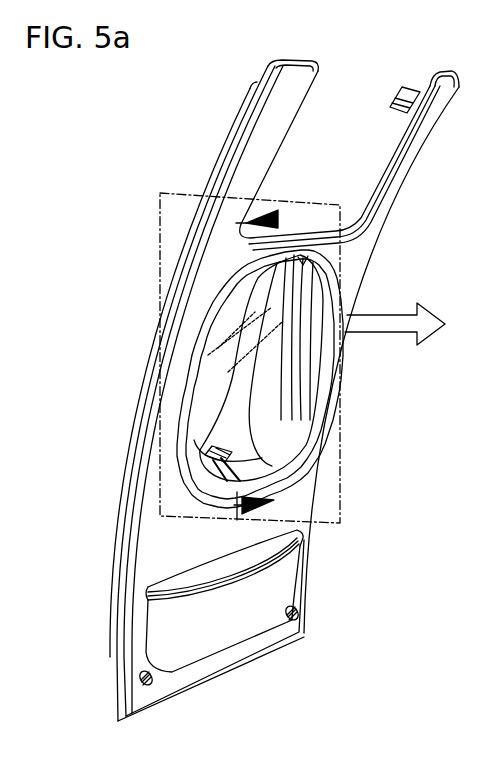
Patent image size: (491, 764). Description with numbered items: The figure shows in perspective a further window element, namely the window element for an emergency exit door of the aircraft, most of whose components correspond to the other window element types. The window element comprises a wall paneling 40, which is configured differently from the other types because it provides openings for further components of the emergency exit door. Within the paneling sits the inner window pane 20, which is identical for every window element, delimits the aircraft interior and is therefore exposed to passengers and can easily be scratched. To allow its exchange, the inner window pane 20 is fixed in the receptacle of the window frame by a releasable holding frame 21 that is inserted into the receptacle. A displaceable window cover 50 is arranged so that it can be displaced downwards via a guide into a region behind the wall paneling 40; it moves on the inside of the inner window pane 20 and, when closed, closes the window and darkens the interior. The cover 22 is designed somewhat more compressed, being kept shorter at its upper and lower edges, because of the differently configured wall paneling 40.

The wall paneling 40 is at (263, 147).
The inner window pane 20 is at (199, 390).
The holding frame 21 is at (250, 427).
The cover 22 is at (193, 480).
The displaceable window cover 50 is at (247, 447).